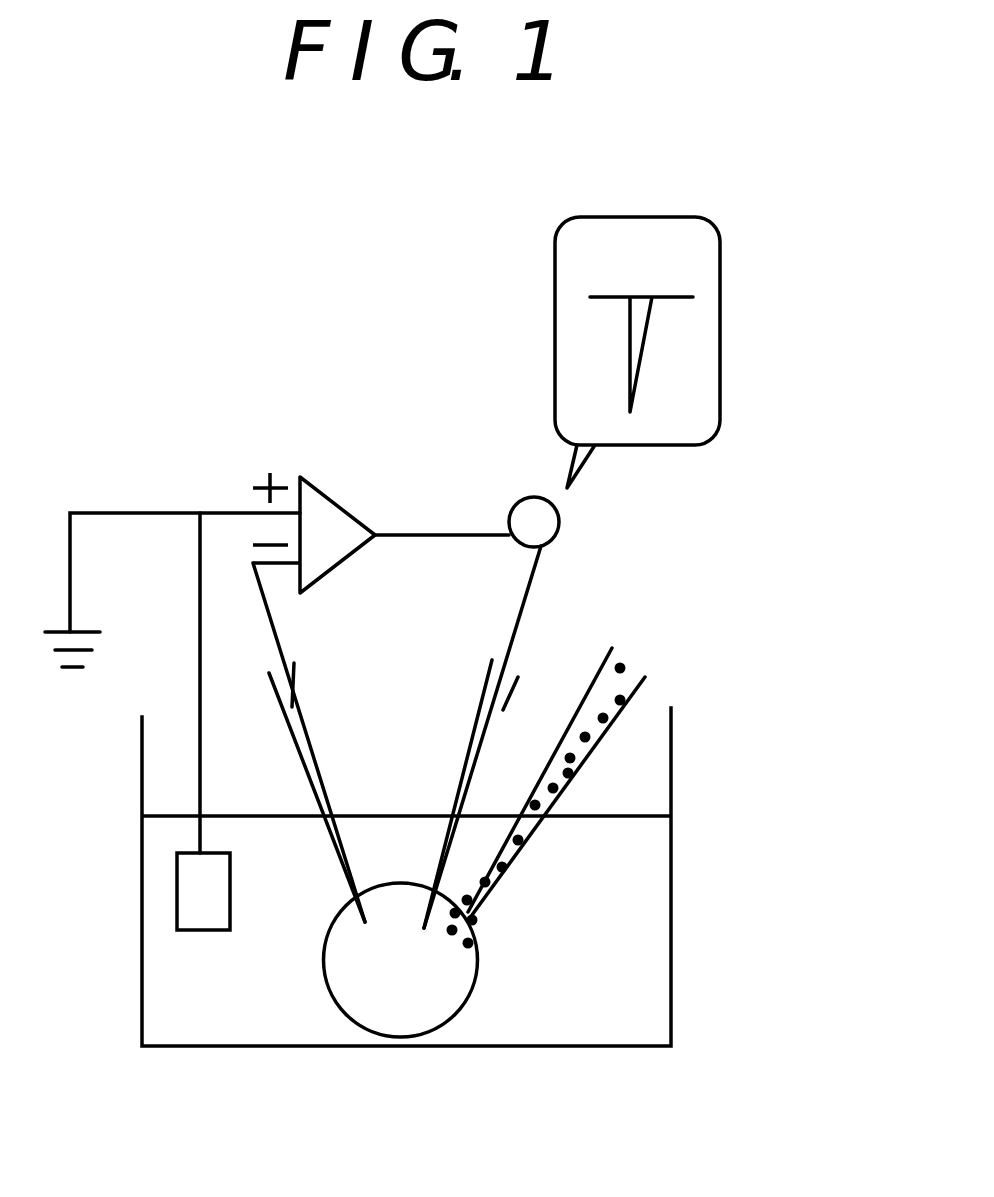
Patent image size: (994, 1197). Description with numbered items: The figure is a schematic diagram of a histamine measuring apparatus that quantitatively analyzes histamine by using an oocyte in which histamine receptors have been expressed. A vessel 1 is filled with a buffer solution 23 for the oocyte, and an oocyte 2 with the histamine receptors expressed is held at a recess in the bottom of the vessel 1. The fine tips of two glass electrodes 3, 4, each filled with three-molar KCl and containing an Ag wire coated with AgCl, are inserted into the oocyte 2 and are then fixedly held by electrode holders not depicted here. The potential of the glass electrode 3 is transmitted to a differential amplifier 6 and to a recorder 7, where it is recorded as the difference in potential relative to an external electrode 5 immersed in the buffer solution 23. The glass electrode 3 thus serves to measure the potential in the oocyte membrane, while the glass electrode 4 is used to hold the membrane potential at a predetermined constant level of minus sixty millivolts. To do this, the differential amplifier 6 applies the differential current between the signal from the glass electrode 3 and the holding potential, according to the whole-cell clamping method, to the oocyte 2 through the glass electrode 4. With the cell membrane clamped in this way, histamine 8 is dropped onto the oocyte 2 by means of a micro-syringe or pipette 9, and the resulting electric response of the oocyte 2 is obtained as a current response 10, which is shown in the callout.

The vessel 1 is at (142, 995).
The oocyte 2 is at (433, 1015).
The glass electrode 3 is at (502, 710).
The glass electrode 4 is at (313, 748).
The external electrode 5 is at (192, 895).
The differential amplifier 6 is at (333, 507).
The recorder 7 is at (515, 508).
The histamine 8 is at (623, 660).
The pipette 9 is at (638, 688).
The current response 10 is at (720, 378).
The buffer solution 23 is at (280, 1022).